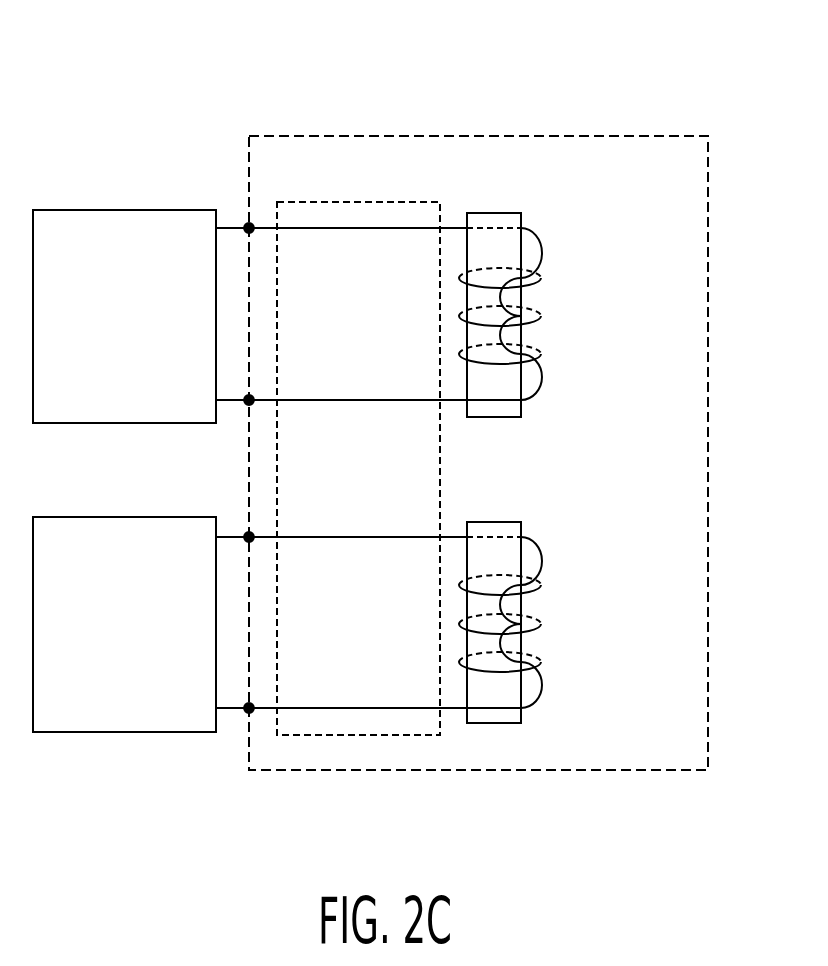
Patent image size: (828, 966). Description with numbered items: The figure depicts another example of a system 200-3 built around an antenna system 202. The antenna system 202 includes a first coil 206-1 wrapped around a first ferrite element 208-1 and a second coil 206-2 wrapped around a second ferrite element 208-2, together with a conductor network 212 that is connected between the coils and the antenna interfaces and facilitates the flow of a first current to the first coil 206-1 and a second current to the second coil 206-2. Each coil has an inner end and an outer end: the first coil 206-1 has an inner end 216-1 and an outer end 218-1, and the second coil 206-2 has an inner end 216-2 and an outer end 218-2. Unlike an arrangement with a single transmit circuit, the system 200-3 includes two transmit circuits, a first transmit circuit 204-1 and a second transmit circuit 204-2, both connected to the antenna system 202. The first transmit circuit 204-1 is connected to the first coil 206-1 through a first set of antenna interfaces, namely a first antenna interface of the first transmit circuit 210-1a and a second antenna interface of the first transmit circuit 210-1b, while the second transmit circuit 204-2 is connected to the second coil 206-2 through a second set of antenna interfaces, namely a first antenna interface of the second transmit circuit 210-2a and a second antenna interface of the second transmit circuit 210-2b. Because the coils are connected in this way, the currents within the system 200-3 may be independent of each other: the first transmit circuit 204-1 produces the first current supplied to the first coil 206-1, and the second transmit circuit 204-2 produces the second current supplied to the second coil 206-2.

The system 200-3 is at (148, 37).
The antenna system 202 is at (292, 134).
The conductor network 212 is at (365, 200).
The first transmit circuit 204-1 is at (155, 335).
The second transmit circuit 204-2 is at (155, 645).
The first antenna interface of the first transmit circuit 210-1a is at (248, 225).
The second antenna interface of the first transmit circuit 210-1b is at (247, 405).
The first antenna interface of the second transmit circuit 210-2a is at (247, 533).
The second antenna interface of the second transmit circuit 210-2b is at (247, 713).
The first ferrite element 208-1 is at (522, 216).
The second ferrite element 208-2 is at (522, 522).
The first coil 206-1 is at (541, 292).
The second coil 206-2 is at (540, 605).
The outer end of the first coil 218-1 is at (550, 240).
The inner end of the first coil 216-1 is at (550, 385).
The inner end of the second coil 216-2 is at (548, 547).
The outer end of the second coil 218-2 is at (548, 697).